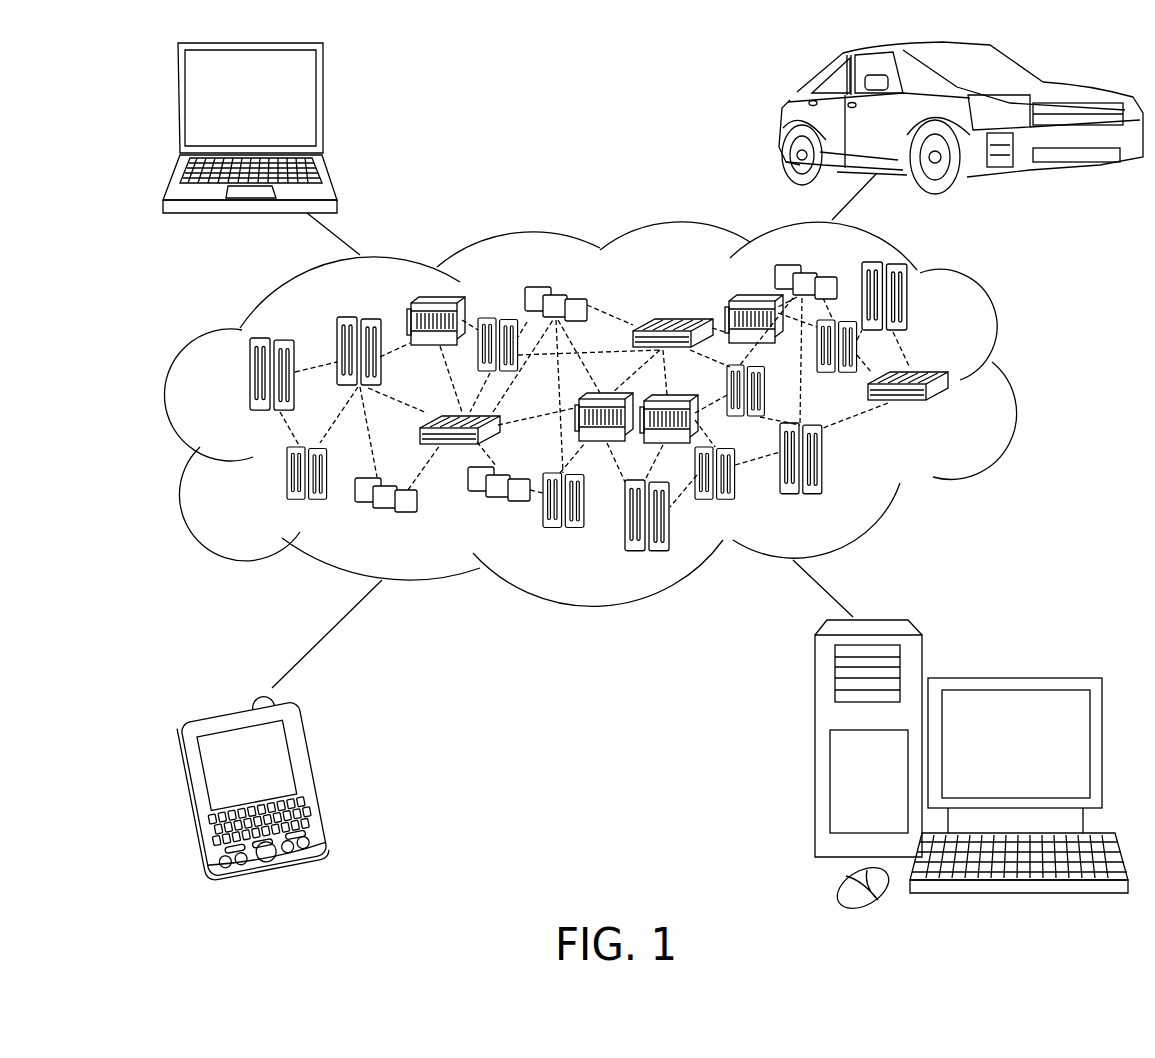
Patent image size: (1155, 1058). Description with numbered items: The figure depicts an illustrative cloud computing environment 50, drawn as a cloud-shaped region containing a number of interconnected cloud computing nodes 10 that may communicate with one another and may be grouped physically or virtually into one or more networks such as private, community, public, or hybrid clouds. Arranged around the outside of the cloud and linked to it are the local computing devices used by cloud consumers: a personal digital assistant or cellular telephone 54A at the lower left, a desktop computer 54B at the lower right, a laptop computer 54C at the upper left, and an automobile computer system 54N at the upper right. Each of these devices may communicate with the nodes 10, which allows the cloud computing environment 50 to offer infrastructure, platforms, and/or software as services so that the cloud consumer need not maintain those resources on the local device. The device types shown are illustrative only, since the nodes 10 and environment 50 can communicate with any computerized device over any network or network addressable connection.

The cloud computing node 10 is at (952, 414).
The cloud computing environment 50 is at (1012, 385).
The personal digital assistant or cellular telephone 54A is at (313, 778).
The desktop computer 54B is at (1012, 677).
The laptop computer 54C is at (323, 107).
The automobile computer system 54N is at (782, 120).